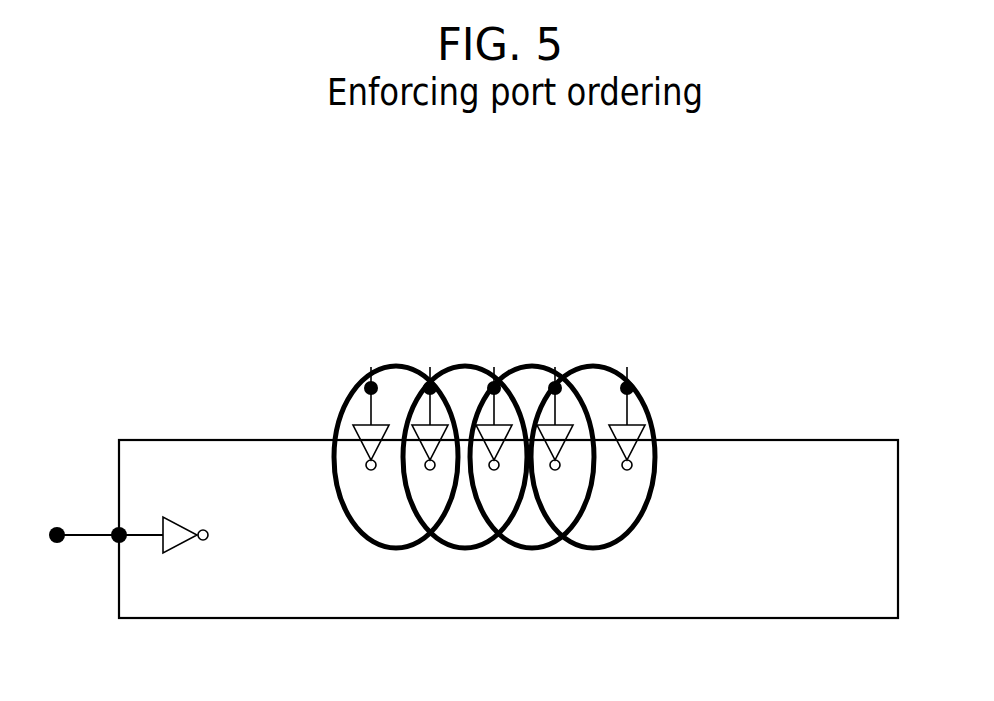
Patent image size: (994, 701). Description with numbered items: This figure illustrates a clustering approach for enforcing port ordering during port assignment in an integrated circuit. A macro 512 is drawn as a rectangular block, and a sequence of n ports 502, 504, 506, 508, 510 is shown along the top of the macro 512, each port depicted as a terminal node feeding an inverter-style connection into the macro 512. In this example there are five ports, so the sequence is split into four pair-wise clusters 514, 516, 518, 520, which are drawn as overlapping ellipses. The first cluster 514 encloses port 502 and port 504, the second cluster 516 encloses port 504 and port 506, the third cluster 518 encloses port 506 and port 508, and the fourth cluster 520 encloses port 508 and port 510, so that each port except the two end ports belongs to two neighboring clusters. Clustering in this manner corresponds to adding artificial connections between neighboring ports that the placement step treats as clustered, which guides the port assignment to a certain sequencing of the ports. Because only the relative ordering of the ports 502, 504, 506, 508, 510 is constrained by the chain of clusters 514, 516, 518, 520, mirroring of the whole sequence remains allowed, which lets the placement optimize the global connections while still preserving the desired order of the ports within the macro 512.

The port 502 is at (367, 383).
The port 504 is at (430, 385).
The port 506 is at (497, 383).
The port 508 is at (557, 383).
The port 510 is at (632, 386).
The macro 512 is at (792, 452).
The pair-wise cluster 514 is at (360, 533).
The pair-wise cluster 516 is at (463, 548).
The pair-wise cluster 518 is at (537, 550).
The pair-wise cluster 520 is at (600, 550).